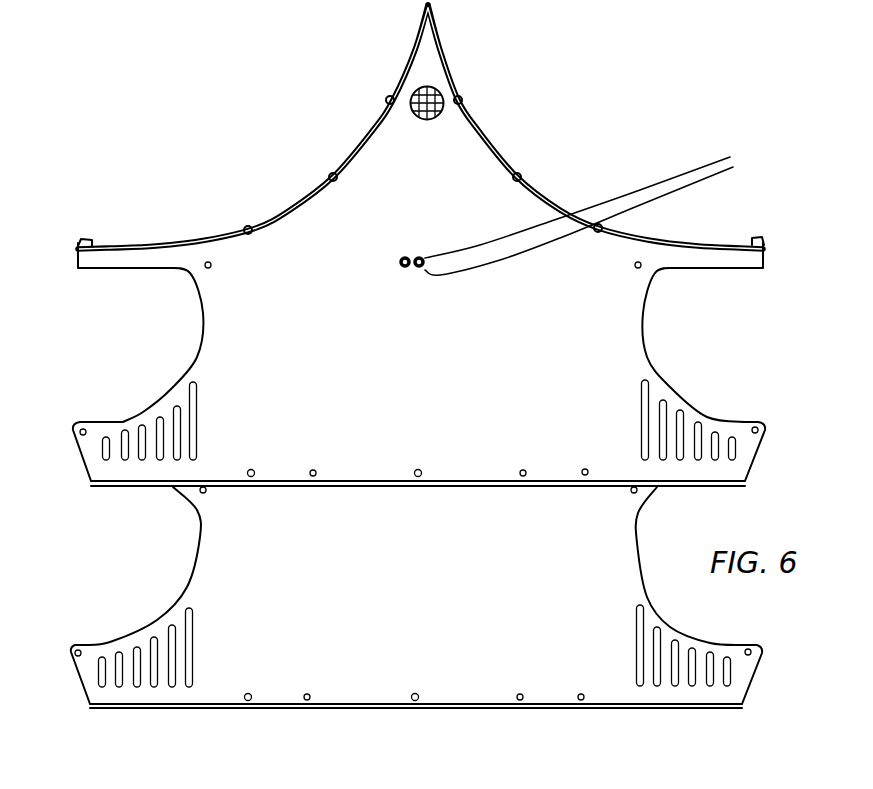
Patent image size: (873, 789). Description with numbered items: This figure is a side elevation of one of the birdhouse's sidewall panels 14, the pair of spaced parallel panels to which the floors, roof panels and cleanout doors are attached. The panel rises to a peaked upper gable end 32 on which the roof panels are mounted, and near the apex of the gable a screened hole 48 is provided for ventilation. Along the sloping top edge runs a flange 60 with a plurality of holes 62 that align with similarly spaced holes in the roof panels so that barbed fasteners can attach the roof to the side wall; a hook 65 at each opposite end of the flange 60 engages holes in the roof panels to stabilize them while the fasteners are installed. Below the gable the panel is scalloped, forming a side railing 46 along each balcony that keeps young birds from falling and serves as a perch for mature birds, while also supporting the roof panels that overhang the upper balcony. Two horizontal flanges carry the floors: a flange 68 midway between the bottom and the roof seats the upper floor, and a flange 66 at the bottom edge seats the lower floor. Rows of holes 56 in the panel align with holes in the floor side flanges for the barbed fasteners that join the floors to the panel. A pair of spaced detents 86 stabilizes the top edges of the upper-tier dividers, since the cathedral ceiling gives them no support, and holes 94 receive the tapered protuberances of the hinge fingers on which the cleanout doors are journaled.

The sidewall panel 14 is at (430, 227).
The upper gable end 32 is at (448, 153).
The side railing 46 is at (123, 420).
The screened hole 48 is at (442, 88).
The holes 56 is at (256, 703).
The flange 60 is at (548, 208).
The holes 62 is at (248, 226).
The hook 65 is at (84, 241).
The flange 66 is at (90, 708).
The flange 68 is at (90, 486).
The detents 86 is at (592, 212).
The hole 94 is at (735, 308).